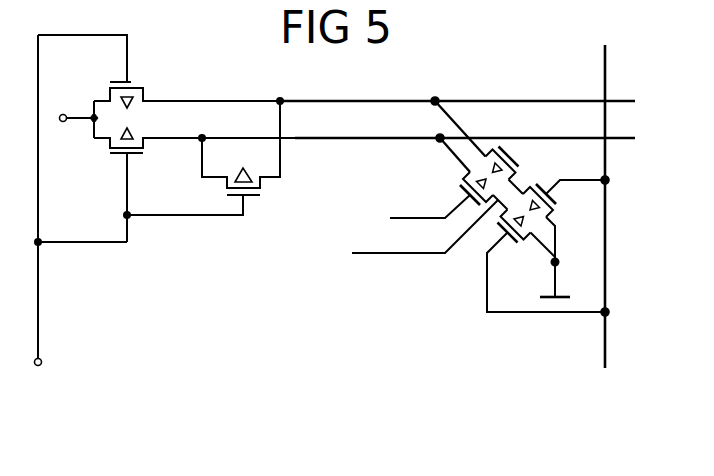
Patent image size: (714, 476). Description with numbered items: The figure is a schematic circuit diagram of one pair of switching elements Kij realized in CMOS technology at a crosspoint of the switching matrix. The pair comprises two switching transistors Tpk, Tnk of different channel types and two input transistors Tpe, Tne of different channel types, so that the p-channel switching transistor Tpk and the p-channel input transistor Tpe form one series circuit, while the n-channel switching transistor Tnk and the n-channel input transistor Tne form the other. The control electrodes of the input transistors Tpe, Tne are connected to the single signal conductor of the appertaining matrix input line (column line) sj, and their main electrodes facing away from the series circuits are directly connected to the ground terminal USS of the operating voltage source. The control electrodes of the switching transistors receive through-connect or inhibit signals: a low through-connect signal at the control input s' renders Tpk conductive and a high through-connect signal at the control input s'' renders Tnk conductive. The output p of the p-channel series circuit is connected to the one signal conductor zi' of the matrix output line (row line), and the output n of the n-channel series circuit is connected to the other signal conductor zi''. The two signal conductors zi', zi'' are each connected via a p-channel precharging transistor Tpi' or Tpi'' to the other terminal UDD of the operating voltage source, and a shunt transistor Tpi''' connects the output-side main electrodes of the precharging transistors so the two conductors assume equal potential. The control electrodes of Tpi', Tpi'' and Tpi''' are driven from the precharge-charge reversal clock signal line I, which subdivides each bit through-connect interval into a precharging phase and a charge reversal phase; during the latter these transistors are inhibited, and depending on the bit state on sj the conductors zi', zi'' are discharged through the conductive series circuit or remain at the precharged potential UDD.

The operating voltage source terminal UDD is at (81, 200).
The precharge-charge reversal clock signal line I is at (50, 362).
The precharging transistor Tpi' is at (170, 98).
The precharging transistor Tpi'' is at (196, 185).
The shunt transistor Tpi''' is at (233, 156).
The signal conductor zi' is at (457, 89).
The signal conductor zi'' is at (465, 127).
The matrix input line sj is at (585, 206).
The pair of switching elements Kij is at (445, 318).
The output of the p-channel transistor series circuit p is at (480, 145).
The output of the n-channel transistor series circuit n is at (448, 175).
The switching transistor Tpk is at (543, 160).
The switching transistor Tnk is at (455, 183).
The input transistor Tpe is at (564, 221).
The input transistor Tne is at (546, 261).
The control input s' is at (409, 232).
The control input s'' is at (420, 213).
The ground terminal of the operating voltage source USS is at (568, 282).